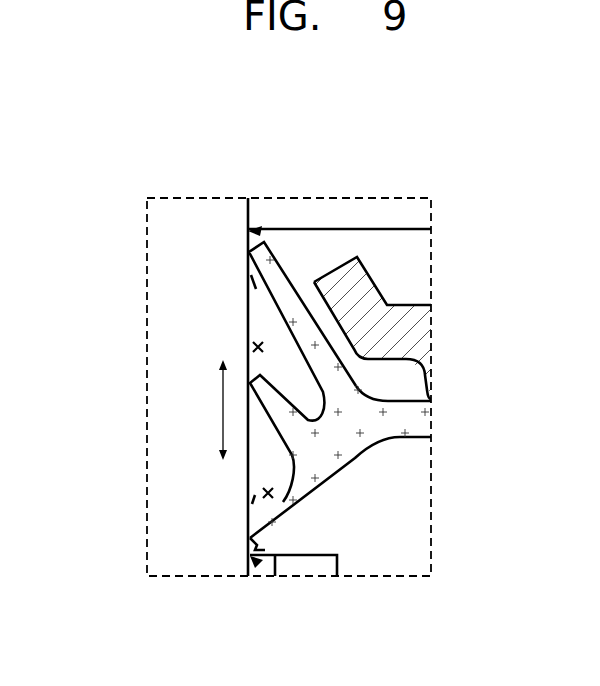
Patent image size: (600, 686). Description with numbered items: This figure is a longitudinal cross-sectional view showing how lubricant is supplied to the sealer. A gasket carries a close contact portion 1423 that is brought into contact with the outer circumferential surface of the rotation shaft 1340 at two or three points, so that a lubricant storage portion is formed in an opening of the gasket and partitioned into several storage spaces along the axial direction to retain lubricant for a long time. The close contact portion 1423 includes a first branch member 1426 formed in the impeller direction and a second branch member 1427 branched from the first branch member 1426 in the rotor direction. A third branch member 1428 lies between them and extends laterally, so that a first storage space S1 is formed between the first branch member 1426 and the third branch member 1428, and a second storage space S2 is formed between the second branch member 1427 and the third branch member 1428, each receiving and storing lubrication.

The rotation shaft 1340 is at (160, 467).
The close contact portion 1423 is at (440, 143).
The first branch member 1426 is at (285, 297).
The third branch member 1428 is at (328, 272).
The second branch member 1427 is at (382, 402).
The first storage space S1 is at (258, 336).
The second storage space S2 is at (282, 502).